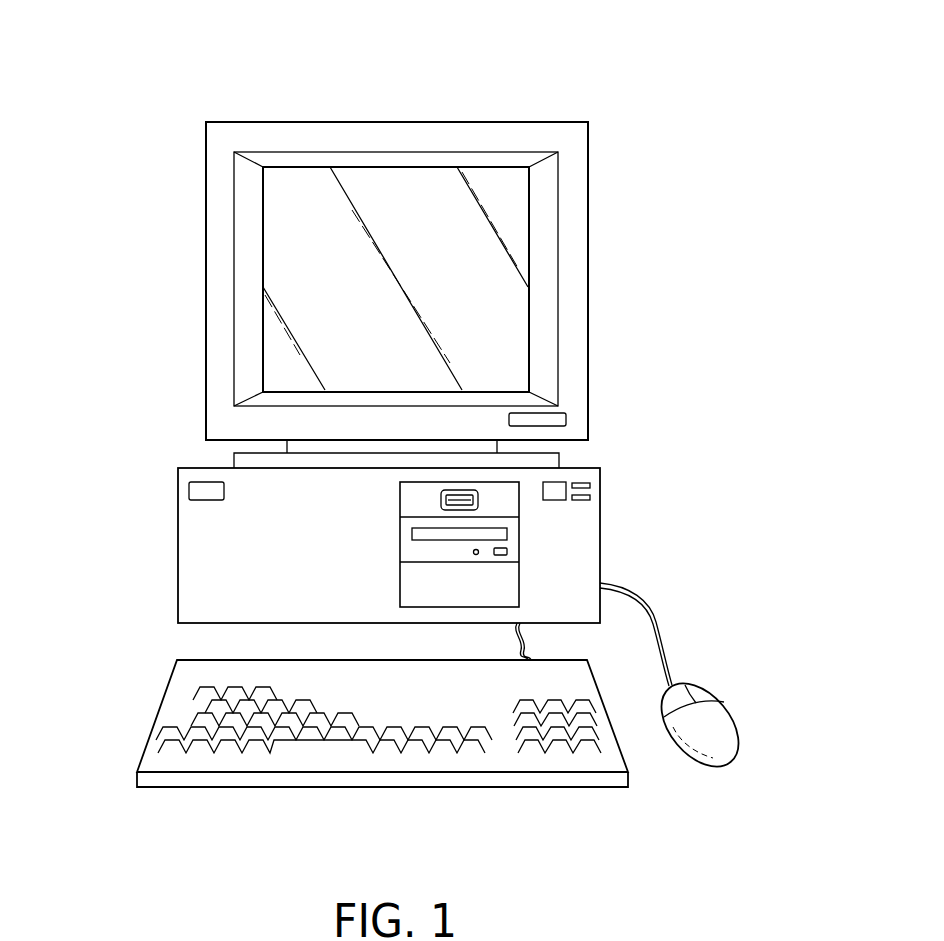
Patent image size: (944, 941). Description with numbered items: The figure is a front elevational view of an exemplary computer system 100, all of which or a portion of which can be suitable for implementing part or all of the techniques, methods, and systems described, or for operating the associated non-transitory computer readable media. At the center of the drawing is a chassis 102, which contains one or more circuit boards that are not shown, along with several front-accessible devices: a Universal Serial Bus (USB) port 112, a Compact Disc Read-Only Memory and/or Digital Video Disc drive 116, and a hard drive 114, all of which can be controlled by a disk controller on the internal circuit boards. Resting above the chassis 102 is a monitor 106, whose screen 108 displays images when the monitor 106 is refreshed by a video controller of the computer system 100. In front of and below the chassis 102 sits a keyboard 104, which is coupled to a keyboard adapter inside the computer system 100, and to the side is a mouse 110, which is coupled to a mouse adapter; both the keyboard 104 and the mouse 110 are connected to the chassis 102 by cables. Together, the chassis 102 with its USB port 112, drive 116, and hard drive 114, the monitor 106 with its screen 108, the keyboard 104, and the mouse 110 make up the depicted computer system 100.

The computer system 100 is at (580, 96).
The chassis 102 is at (178, 547).
The keyboard 104 is at (162, 708).
The monitor 106 is at (283, 121).
The screen 108 is at (310, 283).
The mouse 110 is at (718, 715).
The Universal Serial Bus (USB) port 112 is at (480, 497).
The hard drive 114 is at (510, 583).
The Compact Disc Read-Only Memory (CD-ROM) and/or Digital Video Disc (DVD) drive 116 is at (510, 540).